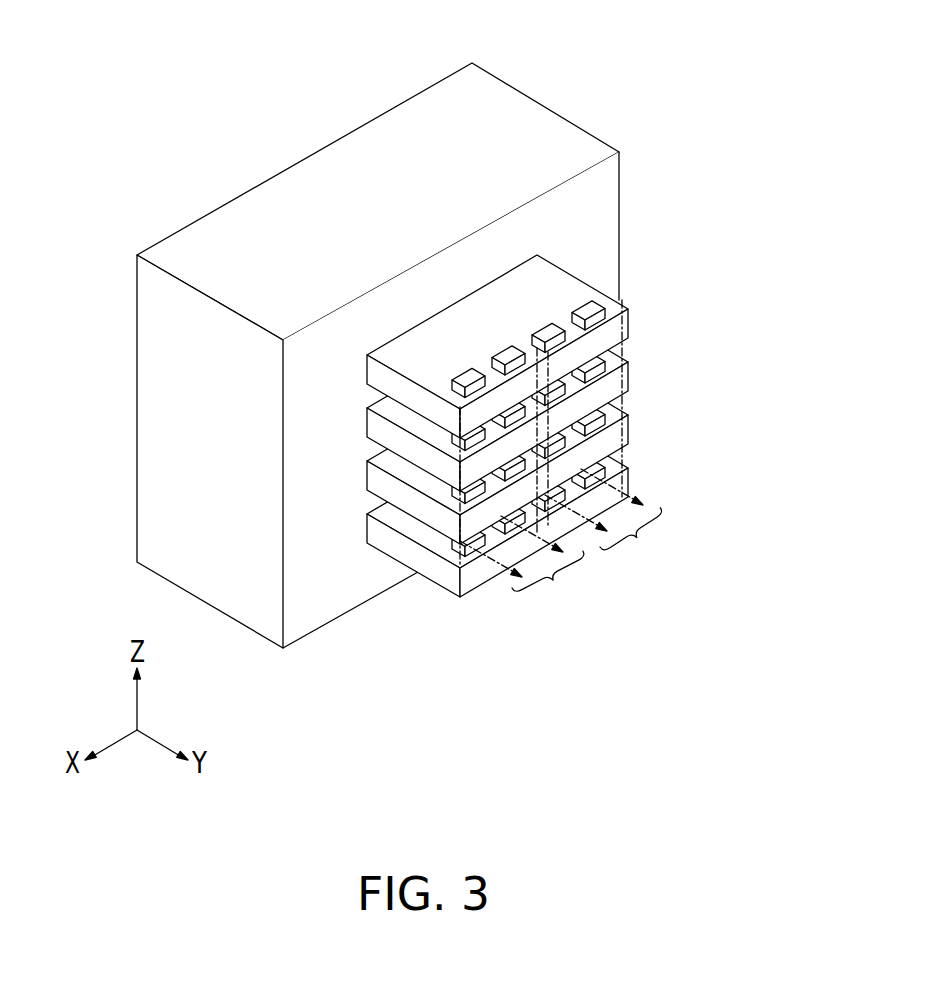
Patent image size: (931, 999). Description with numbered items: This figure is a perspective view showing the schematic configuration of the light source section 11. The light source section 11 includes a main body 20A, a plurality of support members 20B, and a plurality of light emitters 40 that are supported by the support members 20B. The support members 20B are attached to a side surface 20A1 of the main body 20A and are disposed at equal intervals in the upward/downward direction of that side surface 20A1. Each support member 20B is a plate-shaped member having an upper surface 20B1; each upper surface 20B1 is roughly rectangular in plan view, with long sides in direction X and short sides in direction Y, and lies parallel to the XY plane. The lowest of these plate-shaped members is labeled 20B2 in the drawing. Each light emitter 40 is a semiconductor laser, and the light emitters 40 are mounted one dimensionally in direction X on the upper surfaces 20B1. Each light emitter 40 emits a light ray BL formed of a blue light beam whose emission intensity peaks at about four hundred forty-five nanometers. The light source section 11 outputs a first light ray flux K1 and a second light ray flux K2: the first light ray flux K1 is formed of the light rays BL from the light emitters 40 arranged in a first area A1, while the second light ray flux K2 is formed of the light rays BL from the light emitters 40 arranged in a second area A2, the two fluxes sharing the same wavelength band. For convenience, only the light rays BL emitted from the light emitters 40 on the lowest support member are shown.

The light source section 11 is at (442, 367).
The main body 20A is at (378, 367).
The side surface 20A1 is at (297, 625).
The support member 20B is at (417, 416).
The upper surface 20B1 is at (547, 336).
The lowermost layer 20B2 is at (463, 587).
The light emitter 40 is at (607, 297).
The first area A1 is at (630, 408).
The second area A2 is at (415, 582).
The light ray BL is at (636, 491).
The first light ray flux K1 is at (636, 536).
The second light ray flux K2 is at (555, 580).